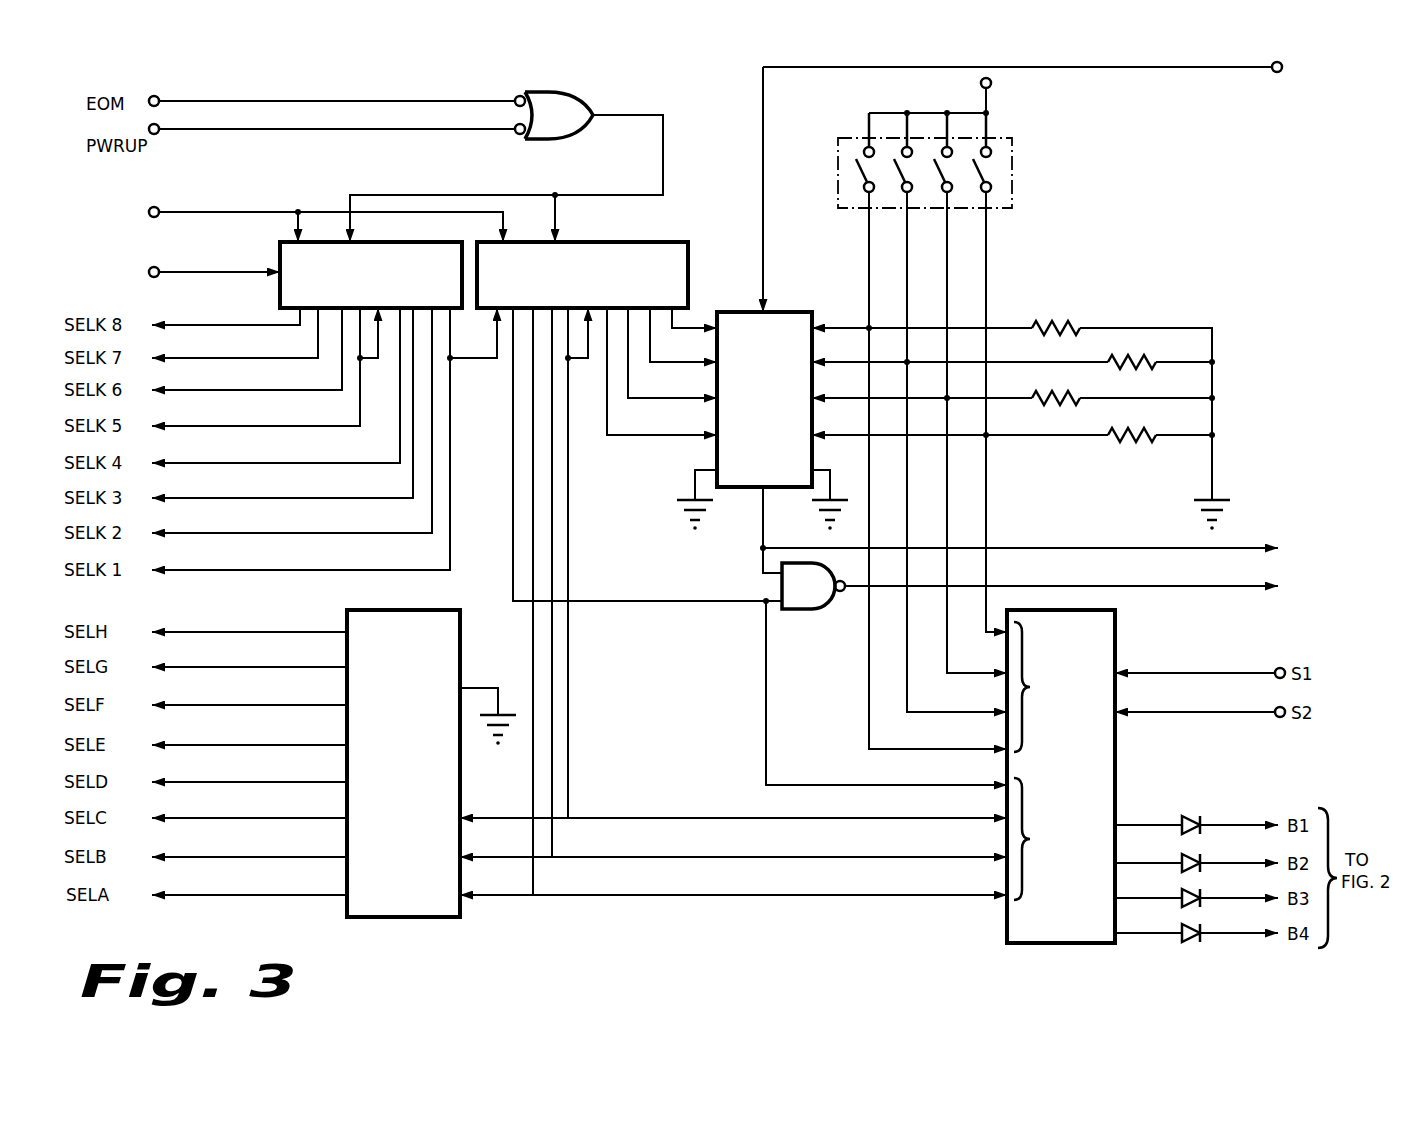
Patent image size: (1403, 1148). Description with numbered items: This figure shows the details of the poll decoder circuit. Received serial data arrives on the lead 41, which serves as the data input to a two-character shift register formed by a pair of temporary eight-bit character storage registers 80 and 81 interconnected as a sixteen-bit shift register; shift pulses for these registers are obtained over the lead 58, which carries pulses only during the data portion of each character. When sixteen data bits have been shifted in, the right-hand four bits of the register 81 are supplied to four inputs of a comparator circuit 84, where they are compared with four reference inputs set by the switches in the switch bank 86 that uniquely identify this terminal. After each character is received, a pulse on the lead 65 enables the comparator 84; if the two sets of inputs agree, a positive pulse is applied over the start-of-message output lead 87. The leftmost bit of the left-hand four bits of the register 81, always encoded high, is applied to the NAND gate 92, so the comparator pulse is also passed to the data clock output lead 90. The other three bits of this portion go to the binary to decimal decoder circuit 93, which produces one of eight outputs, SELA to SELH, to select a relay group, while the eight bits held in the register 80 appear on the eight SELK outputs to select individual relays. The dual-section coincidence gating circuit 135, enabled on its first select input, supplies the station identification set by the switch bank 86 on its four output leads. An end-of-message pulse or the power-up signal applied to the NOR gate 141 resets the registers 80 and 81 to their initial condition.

The NOR gate 141 is at (562, 92).
The lead 58 is at (193, 212).
The lead 41 is at (193, 272).
The temporary 8-bit character storage register 80 is at (280, 254).
The temporary 8-bit character storage register 81 is at (688, 254).
The comparator circuit 84 is at (788, 312).
The switch bank 86 is at (1012, 158).
The lead 65 is at (1168, 67).
The start-of-message output lead 87 is at (1177, 548).
The data clock output lead 90 is at (1180, 586).
The NAND gate 92 is at (800, 609).
The dual-section coincidence gating circuit 135 is at (1118, 770).
The binary to decimal decoder circuit 93 is at (347, 913).